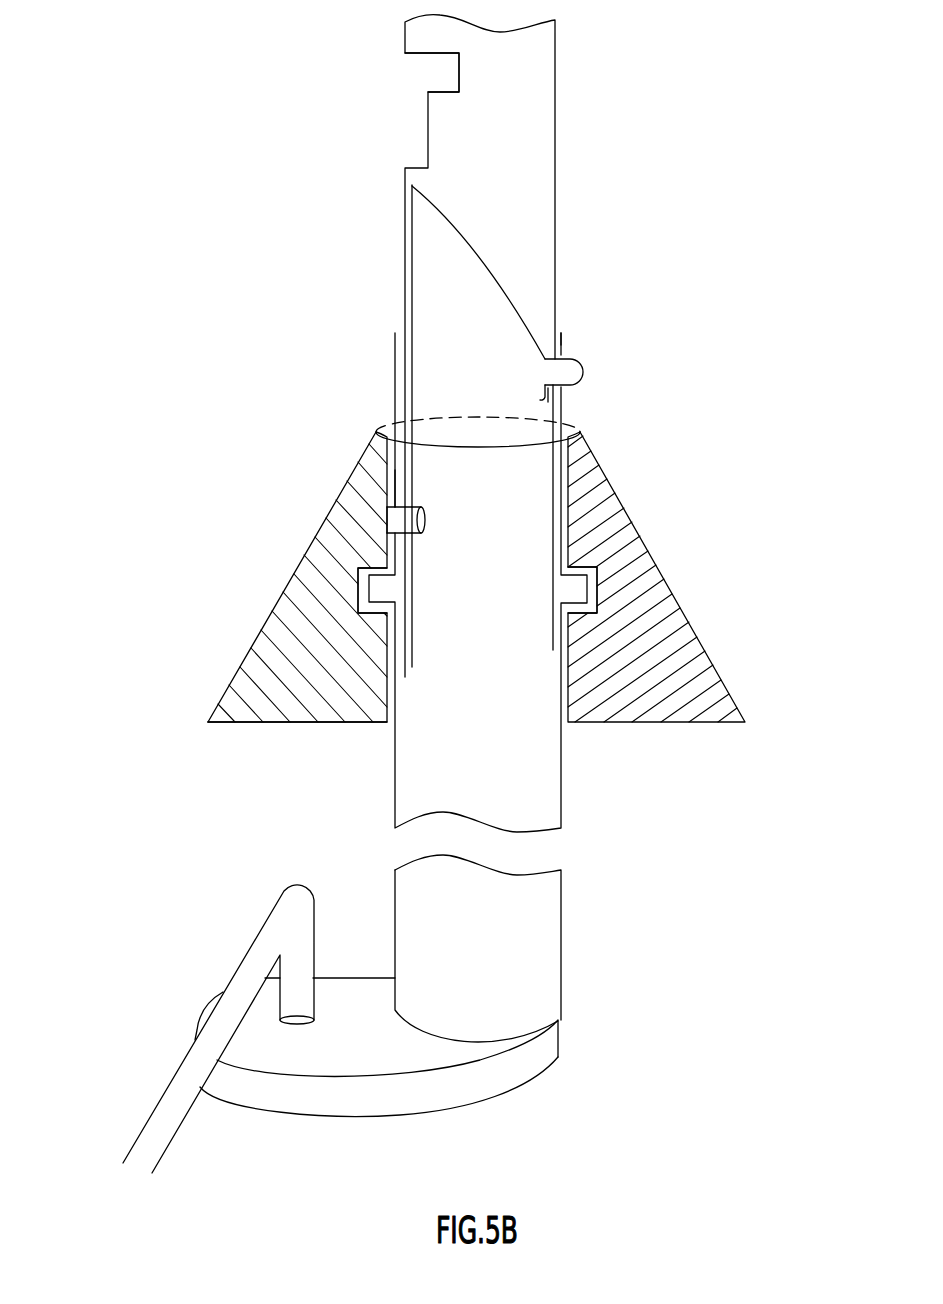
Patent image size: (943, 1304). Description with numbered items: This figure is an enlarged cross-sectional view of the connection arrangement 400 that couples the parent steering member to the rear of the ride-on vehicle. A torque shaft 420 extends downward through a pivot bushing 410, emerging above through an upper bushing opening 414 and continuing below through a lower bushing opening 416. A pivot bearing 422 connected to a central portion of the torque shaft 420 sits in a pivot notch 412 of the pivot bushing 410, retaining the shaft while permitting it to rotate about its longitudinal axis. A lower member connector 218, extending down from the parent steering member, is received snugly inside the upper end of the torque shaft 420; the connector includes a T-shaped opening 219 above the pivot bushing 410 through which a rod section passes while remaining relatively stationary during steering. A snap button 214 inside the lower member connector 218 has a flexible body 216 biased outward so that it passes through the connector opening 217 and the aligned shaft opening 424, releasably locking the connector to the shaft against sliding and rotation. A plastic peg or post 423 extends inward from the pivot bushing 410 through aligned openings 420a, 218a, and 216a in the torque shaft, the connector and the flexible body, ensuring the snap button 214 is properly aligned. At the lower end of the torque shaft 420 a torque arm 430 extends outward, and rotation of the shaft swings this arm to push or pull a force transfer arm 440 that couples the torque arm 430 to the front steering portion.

The grinder assembly 400 is at (760, 447).
The lower member connector 218 is at (555, 192).
The T-shaped opening 219 is at (416, 75).
The flexible body 216 is at (497, 277).
The snap button 214 is at (583, 372).
The connector opening 217 is at (540, 400).
The opening in the body 216a is at (416, 538).
The opening in the connector 218a is at (409, 542).
The torque shaft 420 is at (395, 372).
The shaft opening 424 is at (562, 355).
The opening in the torque shaft 420a is at (390, 496).
The peg or post 423 is at (413, 515).
The pivot bushing 410 is at (647, 548).
The upper bushing opening 414 is at (533, 451).
The pivot bearing 422 is at (388, 630).
The pivot notch 412 is at (597, 592).
The lower bushing opening 416 is at (383, 730).
The torque arm 430 is at (388, 1117).
The force transfer arm 440 is at (150, 1117).